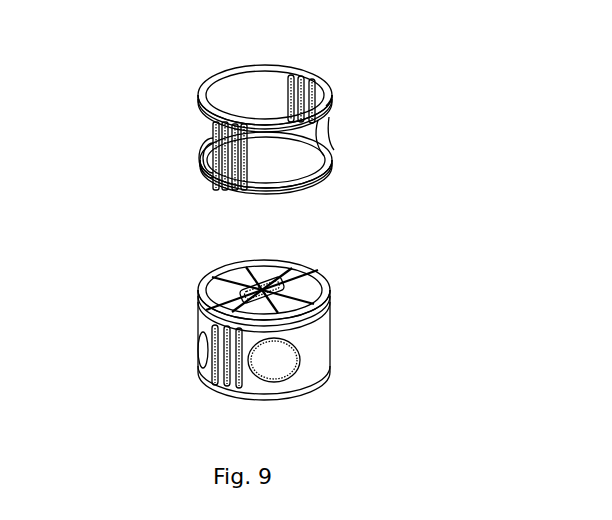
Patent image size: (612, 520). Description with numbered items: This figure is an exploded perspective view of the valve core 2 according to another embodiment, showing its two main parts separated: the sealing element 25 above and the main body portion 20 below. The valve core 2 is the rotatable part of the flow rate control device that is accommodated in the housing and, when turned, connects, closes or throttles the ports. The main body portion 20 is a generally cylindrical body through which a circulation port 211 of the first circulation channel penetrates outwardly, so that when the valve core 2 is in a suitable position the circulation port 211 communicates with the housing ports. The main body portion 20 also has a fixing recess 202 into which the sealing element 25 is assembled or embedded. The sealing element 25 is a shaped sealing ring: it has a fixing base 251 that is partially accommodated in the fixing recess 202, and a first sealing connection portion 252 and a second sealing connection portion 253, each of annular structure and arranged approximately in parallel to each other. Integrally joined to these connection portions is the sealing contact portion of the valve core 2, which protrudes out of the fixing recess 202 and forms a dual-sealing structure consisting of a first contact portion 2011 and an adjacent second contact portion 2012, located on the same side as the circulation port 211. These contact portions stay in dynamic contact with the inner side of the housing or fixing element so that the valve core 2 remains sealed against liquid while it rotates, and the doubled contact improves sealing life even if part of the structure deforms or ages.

The valve core 2 is at (165, 75).
The sealing element 25 is at (333, 98).
The fixing base 251 is at (287, 97).
The first sealing connection portion 252 is at (333, 92).
The second sealing connection portion 253 is at (335, 137).
The first contact portion 2011 is at (215, 134).
The second contact portion 2012 is at (210, 170).
The main body portion 20 is at (330, 293).
The fixing recess 202 is at (207, 383).
The circulation port 211 is at (277, 365).